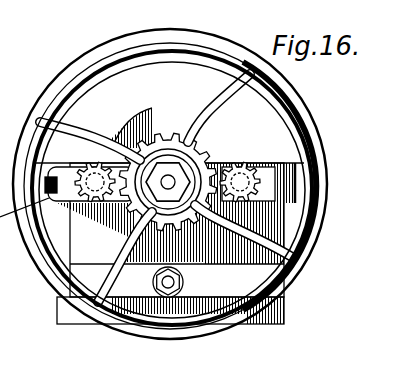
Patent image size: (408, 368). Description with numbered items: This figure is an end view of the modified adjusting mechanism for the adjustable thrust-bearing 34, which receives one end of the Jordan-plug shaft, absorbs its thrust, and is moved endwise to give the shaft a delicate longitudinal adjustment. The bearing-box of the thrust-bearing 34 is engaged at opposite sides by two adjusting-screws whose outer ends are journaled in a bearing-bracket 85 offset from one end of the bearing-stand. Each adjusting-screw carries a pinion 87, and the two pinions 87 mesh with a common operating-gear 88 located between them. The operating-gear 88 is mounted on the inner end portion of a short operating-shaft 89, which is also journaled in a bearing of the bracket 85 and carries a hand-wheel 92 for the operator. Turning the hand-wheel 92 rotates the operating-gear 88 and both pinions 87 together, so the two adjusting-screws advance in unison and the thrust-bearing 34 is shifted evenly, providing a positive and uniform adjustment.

The hand-wheel 92 is at (100, 50).
The operating-gear 88 is at (150, 118).
The operating-shaft 89 is at (168, 182).
The pinions 87 is at (253, 157).
The bearing-bracket 85 is at (282, 172).
The thrust-bearing 34 is at (200, 216).